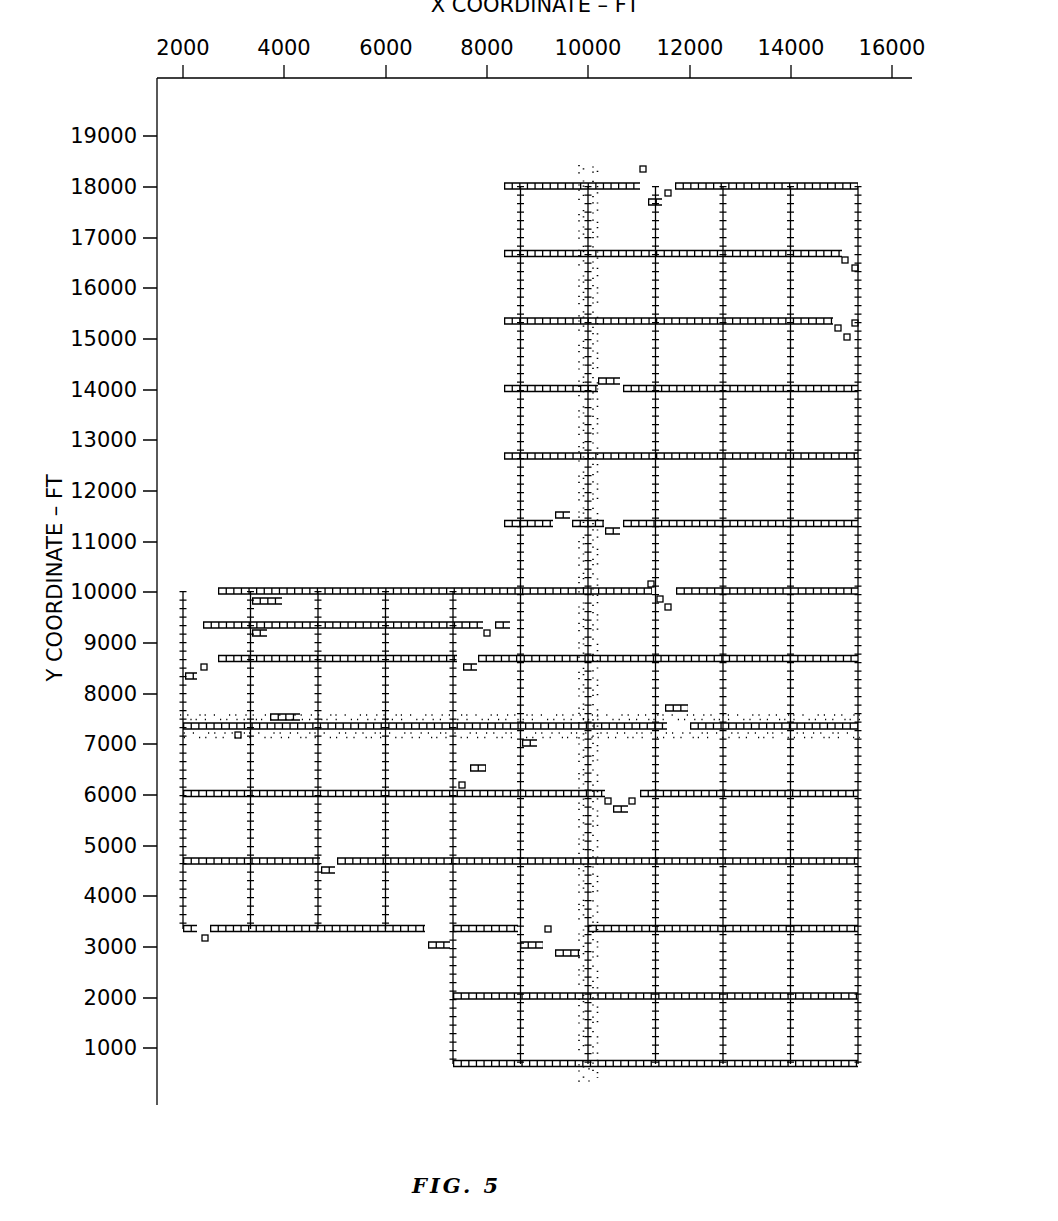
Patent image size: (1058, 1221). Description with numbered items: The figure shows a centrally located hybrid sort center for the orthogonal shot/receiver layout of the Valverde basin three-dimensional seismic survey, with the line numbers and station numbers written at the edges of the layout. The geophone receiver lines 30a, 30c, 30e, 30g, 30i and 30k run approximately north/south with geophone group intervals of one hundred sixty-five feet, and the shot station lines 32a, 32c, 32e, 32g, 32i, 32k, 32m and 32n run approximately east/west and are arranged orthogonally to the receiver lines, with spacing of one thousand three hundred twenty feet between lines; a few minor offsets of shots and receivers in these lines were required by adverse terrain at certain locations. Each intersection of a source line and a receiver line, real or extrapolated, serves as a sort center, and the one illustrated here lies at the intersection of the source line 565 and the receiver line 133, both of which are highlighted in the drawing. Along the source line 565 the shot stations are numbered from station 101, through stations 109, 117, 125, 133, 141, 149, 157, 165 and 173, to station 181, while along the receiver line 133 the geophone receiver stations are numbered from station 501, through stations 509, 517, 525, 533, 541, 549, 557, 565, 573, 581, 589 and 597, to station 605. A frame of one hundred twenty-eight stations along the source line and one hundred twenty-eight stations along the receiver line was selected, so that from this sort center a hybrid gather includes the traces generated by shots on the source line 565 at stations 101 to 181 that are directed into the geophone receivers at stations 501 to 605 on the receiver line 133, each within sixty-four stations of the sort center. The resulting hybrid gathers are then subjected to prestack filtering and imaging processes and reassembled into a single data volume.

The station 101 is at (858, 184).
The station 109 is at (788, 195).
The station 117 is at (723, 185).
The station 125 is at (655, 194).
The receiver line 133 is at (588, 182).
The station 141 is at (520, 190).
The station 149 is at (453, 588).
The station 157 is at (386, 588).
The station 165 is at (318, 588).
The station 173 is at (250, 588).
The station 181 is at (183, 932).
The geophone receiver station 501 is at (860, 186).
The geophone receiver station 509 is at (860, 254).
The geophone receiver station 517 is at (860, 321).
The geophone receiver station 525 is at (860, 388).
The geophone receiver station 533 is at (860, 456).
The geophone receiver station 541 is at (860, 523).
The geophone receiver station 549 is at (860, 591).
The geophone receiver station 557 is at (860, 658).
The source line 565 is at (860, 726).
The geophone receiver station 573 is at (860, 793).
The geophone receiver station 581 is at (860, 861).
The geophone receiver station 589 is at (860, 928).
The geophone receiver station 597 is at (860, 996).
The geophone receiver station 605 is at (860, 1063).
The geophone receiver line 30a is at (858, 887).
The geophone receiver line 30c is at (722, 887).
The geophone receiver line 30e is at (587, 901).
The geophone receiver line 30g is at (451, 887).
The geophone receiver line 30i is at (317, 887).
The geophone receiver line 30k is at (183, 898).
The shot station line 32a is at (779, 1060).
The shot station line 32c is at (779, 926).
The shot station line 32e is at (779, 790).
The shot station line 32g is at (779, 657).
The shot station line 32i is at (779, 520).
The shot station line 32k is at (779, 385).
The shot station line 32m is at (779, 252).
The shot station line 32n is at (812, 183).